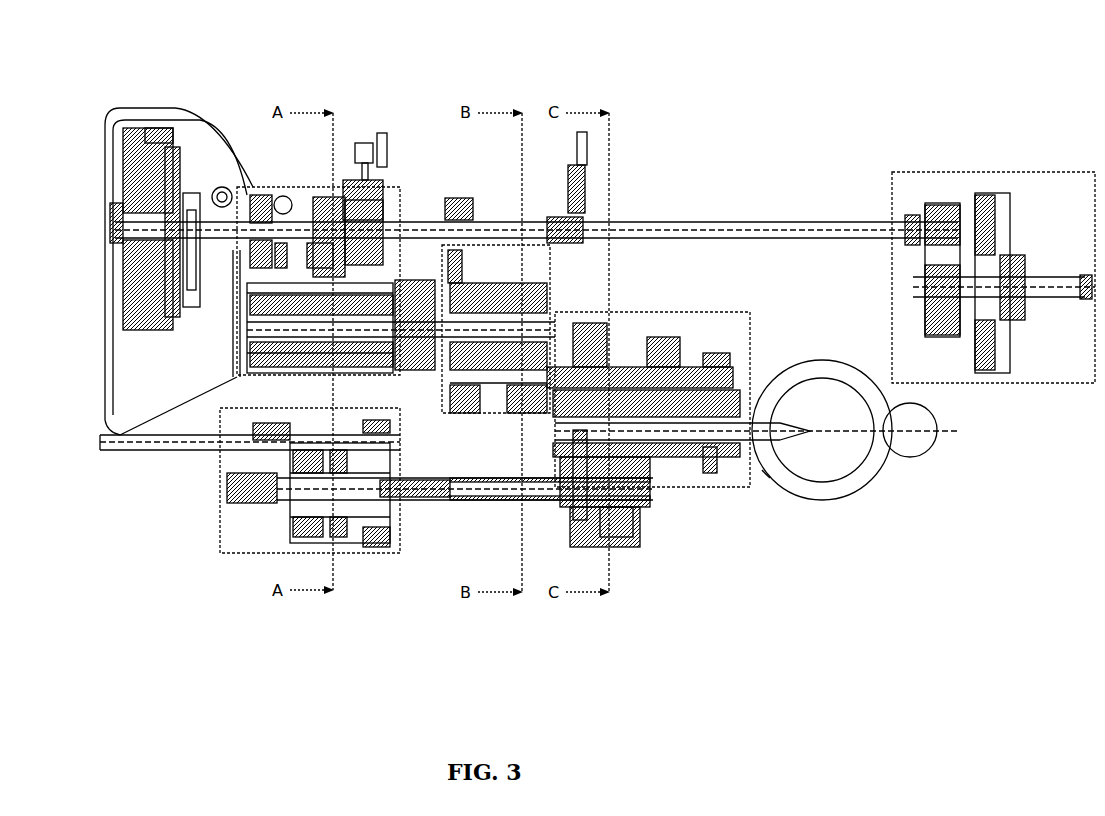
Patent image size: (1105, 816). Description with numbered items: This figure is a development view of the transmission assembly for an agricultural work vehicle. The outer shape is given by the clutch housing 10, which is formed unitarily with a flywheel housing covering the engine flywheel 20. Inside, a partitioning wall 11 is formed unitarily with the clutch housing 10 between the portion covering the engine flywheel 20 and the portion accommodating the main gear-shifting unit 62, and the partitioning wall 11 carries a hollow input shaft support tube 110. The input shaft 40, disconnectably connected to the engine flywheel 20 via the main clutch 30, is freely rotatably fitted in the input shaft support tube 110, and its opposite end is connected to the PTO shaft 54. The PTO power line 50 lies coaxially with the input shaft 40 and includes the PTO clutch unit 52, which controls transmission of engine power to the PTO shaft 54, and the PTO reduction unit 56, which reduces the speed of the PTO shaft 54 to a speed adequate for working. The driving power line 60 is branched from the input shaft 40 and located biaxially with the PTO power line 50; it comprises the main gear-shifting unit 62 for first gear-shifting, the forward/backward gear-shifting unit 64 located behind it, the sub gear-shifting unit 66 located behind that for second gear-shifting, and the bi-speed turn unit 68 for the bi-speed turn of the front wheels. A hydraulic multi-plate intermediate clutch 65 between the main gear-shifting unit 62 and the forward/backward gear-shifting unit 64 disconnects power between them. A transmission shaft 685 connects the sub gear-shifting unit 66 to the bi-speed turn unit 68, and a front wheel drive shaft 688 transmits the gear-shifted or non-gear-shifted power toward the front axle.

The clutch housing 10 is at (253, 187).
The partitioning wall 11 is at (255, 195).
The engine flywheel 20 is at (117, 182).
The main clutch 30 is at (180, 327).
The input shaft 40 is at (237, 290).
The PTO power line 50 is at (800, 46).
The PTO clutch unit 52 is at (335, 190).
The PTO shaft 54 is at (403, 217).
The PTO reduction unit 56 is at (920, 172).
The driving power line 60 is at (724, 650).
The main gear-shifting unit 62 is at (237, 376).
The forward/backward gear-shifting unit 64 is at (493, 413).
The intermediate clutch 65 is at (440, 415).
The sub gear-shifting unit 66 is at (667, 487).
The bi-speed turn unit 68 is at (258, 553).
The input shaft support tube 110 is at (197, 285).
The transmission shaft 685 is at (463, 500).
The front wheel drive shaft 688 is at (152, 448).